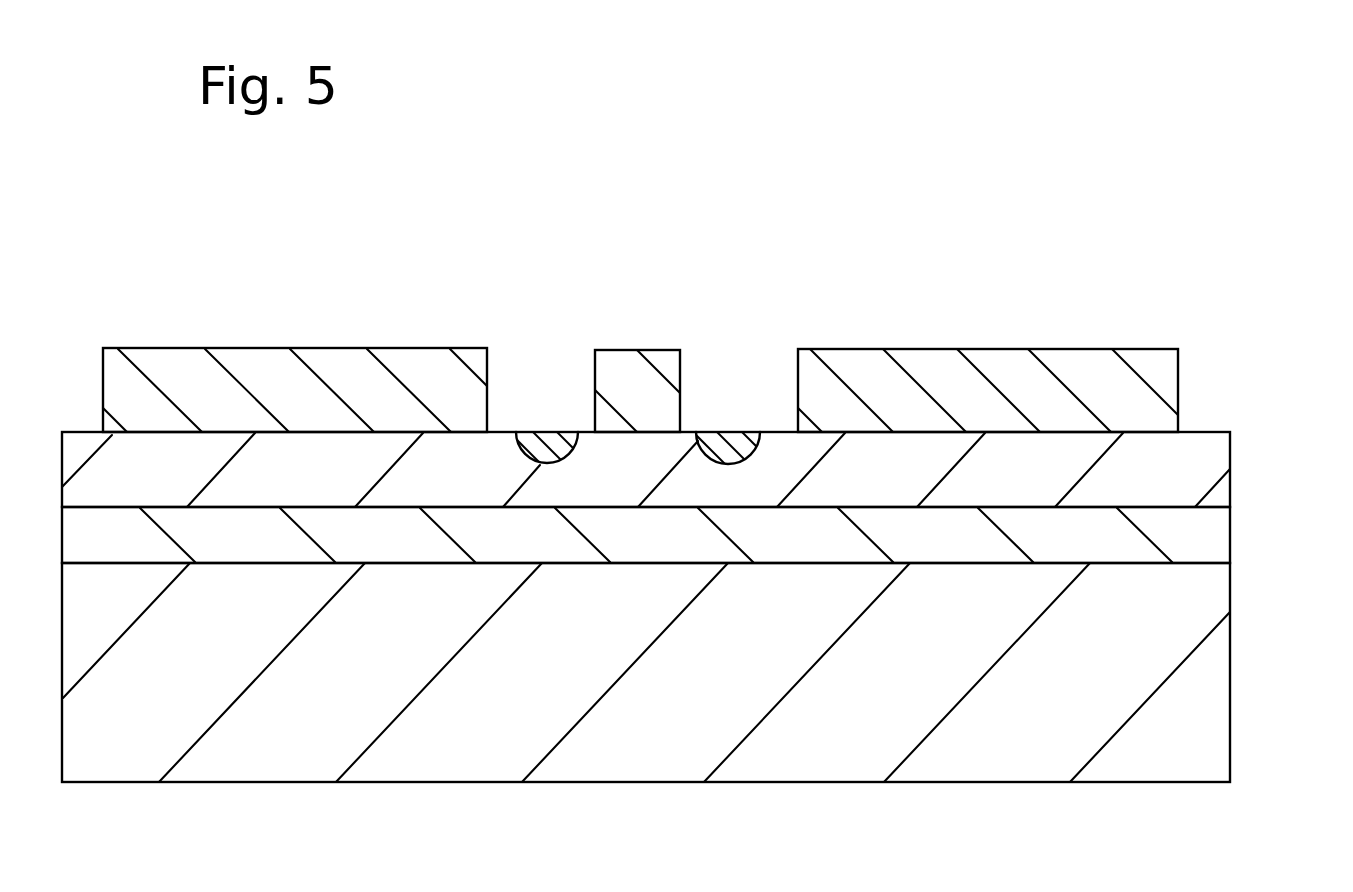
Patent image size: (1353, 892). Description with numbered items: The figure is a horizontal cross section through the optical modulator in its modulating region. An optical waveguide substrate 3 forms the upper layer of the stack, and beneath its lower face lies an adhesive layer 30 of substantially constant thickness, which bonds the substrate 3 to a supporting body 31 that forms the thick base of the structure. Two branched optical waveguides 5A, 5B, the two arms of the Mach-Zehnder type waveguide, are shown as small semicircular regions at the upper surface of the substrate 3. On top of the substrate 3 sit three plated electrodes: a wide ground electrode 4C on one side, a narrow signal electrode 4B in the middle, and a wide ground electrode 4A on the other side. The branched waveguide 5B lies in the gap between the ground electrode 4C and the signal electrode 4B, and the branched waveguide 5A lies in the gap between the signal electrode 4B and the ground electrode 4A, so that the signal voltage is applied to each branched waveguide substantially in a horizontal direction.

The optical waveguide substrate 3 is at (1200, 460).
The adhesive layer 30 is at (1197, 533).
The supporting body 31 is at (1178, 633).
The ground electrode 4A is at (977, 363).
The signal electrode 4B is at (627, 367).
The ground electrode 4C is at (358, 362).
The branched optical waveguide 5A is at (737, 440).
The branched optical waveguide 5B is at (540, 440).